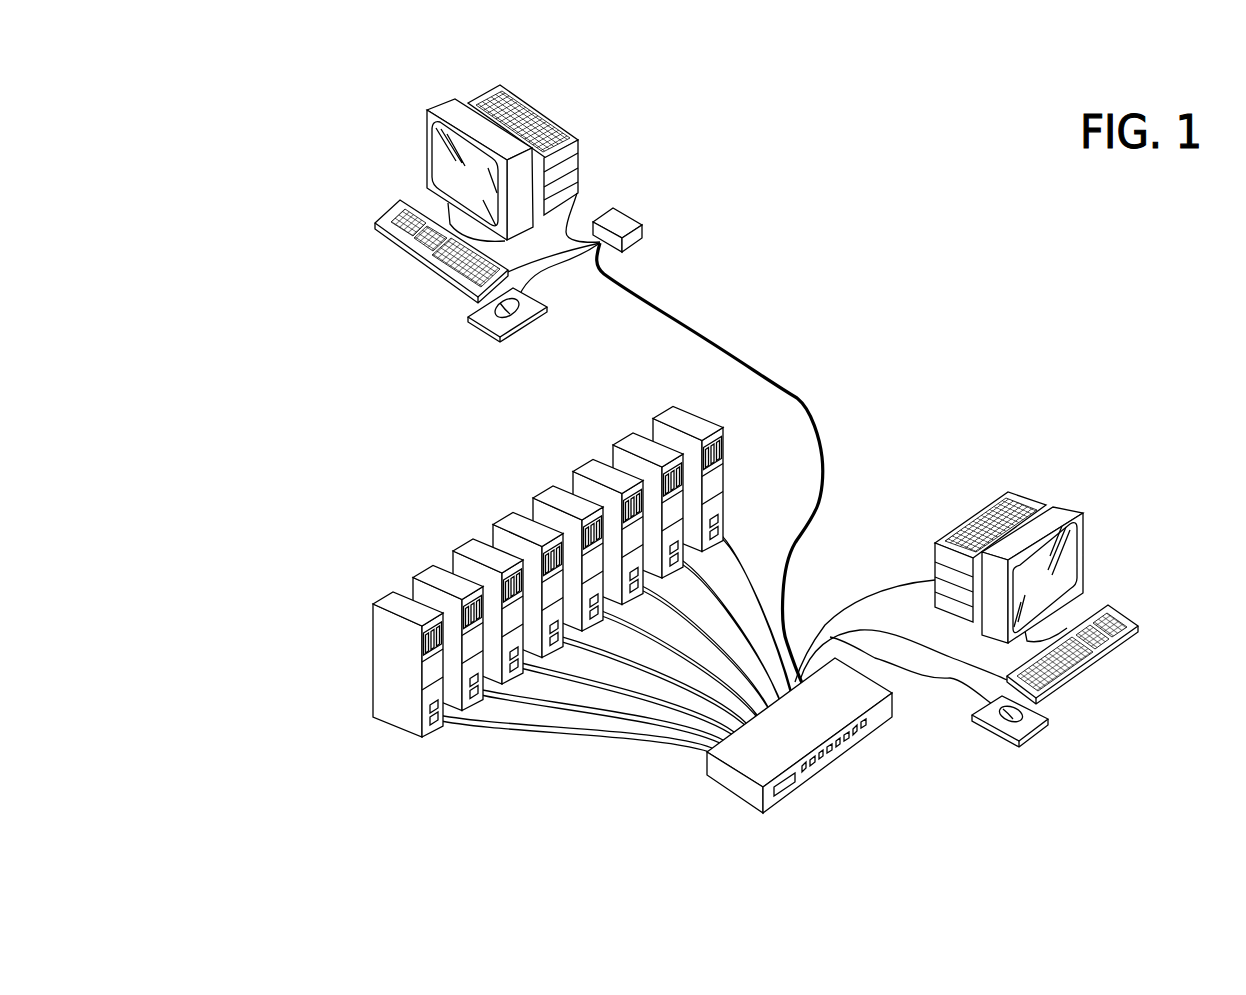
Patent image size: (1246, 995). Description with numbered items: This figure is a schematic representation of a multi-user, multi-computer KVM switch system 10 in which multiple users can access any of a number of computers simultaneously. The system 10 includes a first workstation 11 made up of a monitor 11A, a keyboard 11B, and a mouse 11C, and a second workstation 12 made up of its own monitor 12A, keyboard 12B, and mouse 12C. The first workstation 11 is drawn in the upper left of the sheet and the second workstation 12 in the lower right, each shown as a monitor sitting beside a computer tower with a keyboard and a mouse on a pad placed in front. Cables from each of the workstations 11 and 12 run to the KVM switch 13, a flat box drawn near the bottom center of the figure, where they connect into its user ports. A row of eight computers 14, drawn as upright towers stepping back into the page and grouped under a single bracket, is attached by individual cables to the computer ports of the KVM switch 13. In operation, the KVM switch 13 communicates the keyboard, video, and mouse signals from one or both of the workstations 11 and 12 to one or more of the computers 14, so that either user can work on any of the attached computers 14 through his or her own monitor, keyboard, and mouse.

The system 10 is at (782, 170).
The first workstation 11 is at (342, 78).
The monitor 11A is at (550, 117).
The keyboard 11B is at (427, 270).
The mouse 11C is at (507, 320).
The second workstation 12 is at (1166, 470).
The monitor 12A is at (986, 506).
The keyboard 12B is at (1103, 660).
The mouse 12C is at (1012, 718).
The KVM switch 13 is at (733, 795).
The computers 14 is at (681, 386).